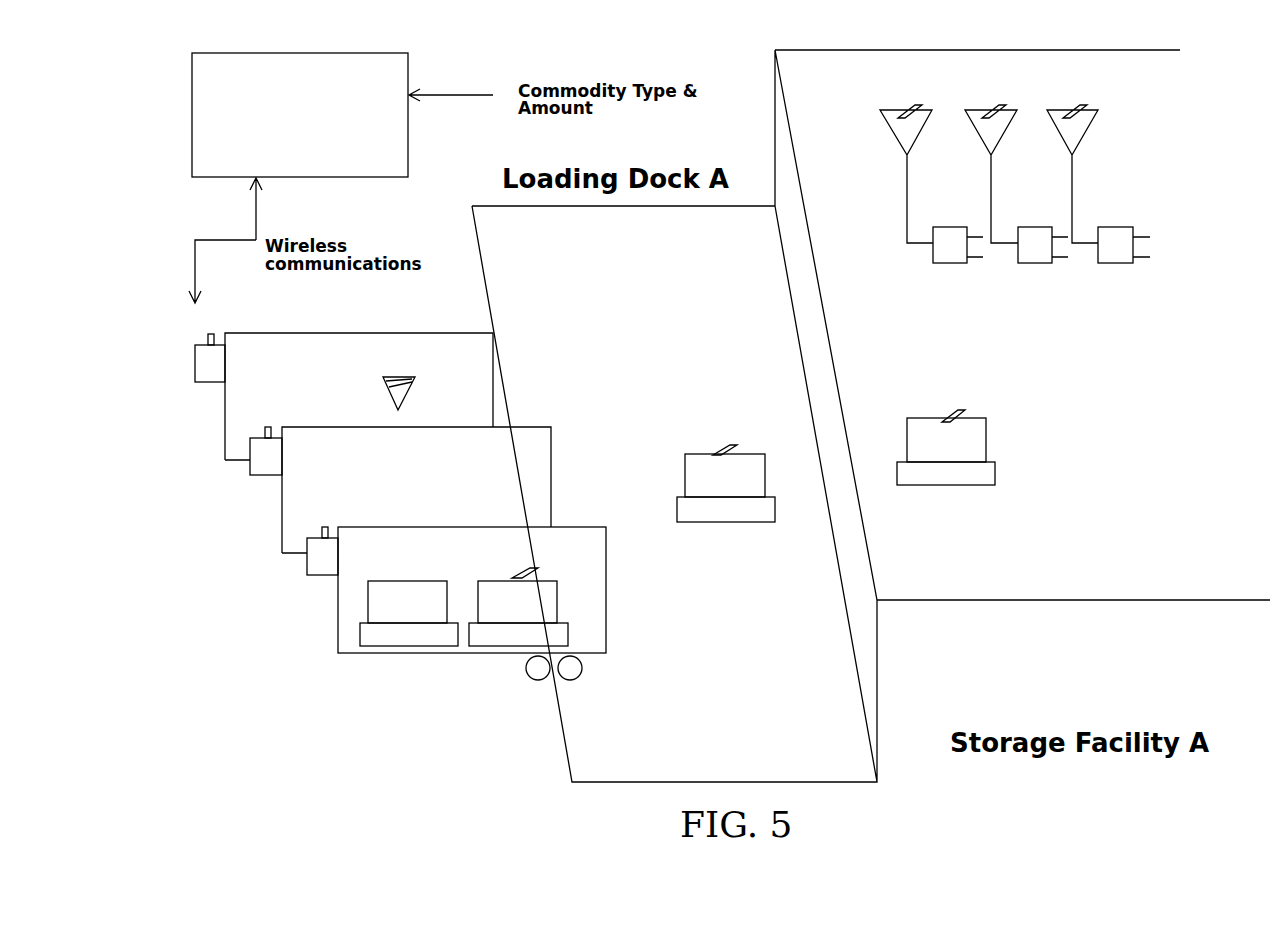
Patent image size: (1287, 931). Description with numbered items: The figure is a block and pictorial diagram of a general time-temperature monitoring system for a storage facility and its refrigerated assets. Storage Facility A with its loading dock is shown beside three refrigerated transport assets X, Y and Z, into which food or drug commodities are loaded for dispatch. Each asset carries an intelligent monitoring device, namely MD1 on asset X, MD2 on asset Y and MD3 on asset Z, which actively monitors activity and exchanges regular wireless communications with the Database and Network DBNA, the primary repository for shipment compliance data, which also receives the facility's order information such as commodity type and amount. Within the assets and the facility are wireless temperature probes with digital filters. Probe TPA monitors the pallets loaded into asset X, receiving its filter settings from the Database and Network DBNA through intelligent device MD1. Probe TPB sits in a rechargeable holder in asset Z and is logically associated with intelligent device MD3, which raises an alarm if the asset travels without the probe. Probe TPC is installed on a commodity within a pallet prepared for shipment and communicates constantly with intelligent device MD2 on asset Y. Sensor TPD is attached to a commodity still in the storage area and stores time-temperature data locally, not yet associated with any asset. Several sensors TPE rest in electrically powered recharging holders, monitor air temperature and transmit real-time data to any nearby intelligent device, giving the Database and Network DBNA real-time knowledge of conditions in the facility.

The Database and Network DBNA is at (300, 115).
The intelligent monitoring device MD1 is at (456, 603).
The intelligent wireless device MD2 is at (400, 490).
The intelligent device MD3 is at (344, 396).
The wireless temperature probe TPA is at (531, 593).
The wireless temperature probe TPB is at (429, 389).
The wireless temperature probe TPC is at (726, 454).
The wireless temperature sensor TPD is at (970, 429).
The wireless temperature sensors TPE is at (1030, 183).
The refrigerated asset X is at (239, 627).
The refrigerated asset Y is at (227, 529).
The refrigerated asset Z is at (189, 434).